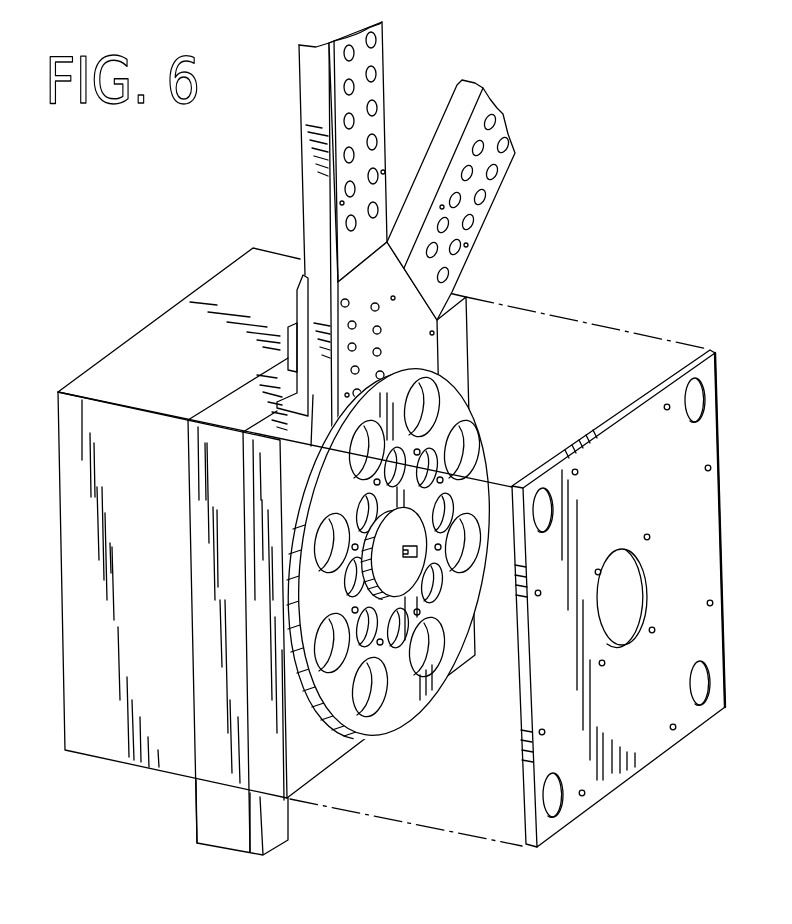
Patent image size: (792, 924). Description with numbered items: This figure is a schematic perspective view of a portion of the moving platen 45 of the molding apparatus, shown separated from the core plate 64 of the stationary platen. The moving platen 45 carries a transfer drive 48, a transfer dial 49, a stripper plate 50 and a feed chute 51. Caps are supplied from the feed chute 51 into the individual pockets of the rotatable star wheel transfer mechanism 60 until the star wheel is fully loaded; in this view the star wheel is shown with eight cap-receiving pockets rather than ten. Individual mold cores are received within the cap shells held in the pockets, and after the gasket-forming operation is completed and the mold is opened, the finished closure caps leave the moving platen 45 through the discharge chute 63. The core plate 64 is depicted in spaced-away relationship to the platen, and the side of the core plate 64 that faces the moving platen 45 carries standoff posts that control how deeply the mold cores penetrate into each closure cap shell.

The moving platen 45 is at (121, 787).
The transfer drive 48 is at (212, 832).
The transfer dial 49 is at (396, 636).
The stripper plate 50 is at (459, 408).
The feed chute 51 is at (383, 25).
The star wheel transfer mechanism 60 is at (430, 412).
The discharge chute 63 is at (471, 88).
The core plate 64 is at (712, 529).